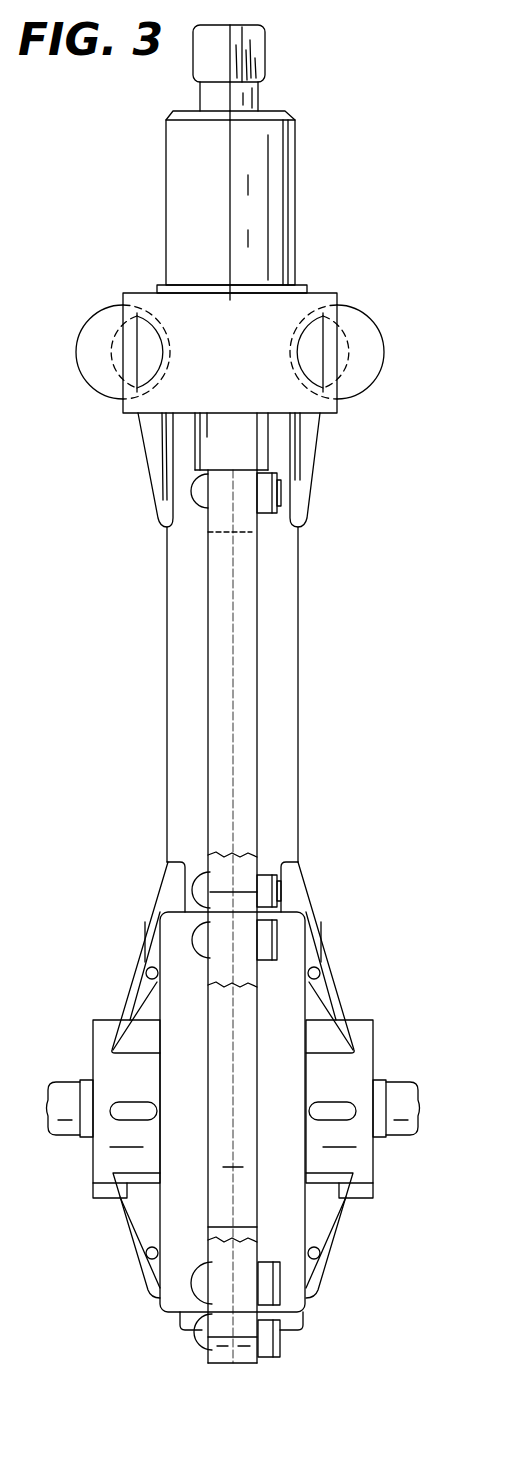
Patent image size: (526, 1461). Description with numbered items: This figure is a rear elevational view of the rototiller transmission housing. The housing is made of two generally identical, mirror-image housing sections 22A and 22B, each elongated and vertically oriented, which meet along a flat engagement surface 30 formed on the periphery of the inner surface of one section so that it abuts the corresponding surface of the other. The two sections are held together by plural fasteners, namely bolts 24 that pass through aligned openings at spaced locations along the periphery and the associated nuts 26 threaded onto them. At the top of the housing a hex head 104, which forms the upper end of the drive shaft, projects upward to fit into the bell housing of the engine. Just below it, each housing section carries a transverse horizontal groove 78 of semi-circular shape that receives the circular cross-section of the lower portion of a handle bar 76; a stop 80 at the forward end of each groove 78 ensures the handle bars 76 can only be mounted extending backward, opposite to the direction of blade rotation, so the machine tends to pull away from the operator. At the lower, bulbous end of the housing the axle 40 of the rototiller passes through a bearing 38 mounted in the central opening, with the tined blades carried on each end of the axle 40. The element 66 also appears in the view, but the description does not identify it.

The hex head 104 is at (260, 66).
The left housing section 22A is at (158, 188).
The right housing section 22B is at (306, 198).
The transverse groove 78 is at (146, 316).
The handle bars 76 is at (82, 331).
The stop 80 is at (146, 355).
The bolts 24 is at (200, 503).
The nuts 26 is at (277, 493).
The flat engagement surface 30 is at (233, 1135).
The side plate 66 is at (397, 990).
The axle 40 is at (50, 1085).
The bearing 38 is at (84, 1137).